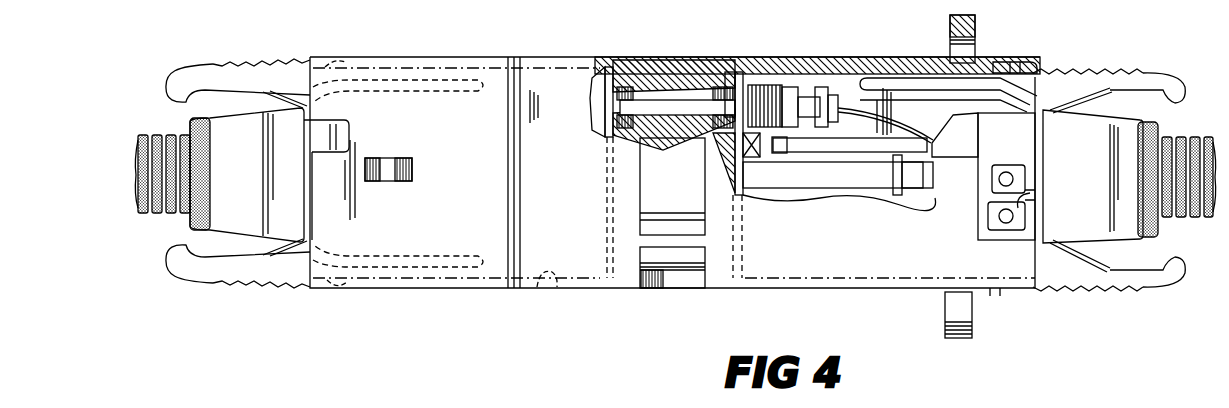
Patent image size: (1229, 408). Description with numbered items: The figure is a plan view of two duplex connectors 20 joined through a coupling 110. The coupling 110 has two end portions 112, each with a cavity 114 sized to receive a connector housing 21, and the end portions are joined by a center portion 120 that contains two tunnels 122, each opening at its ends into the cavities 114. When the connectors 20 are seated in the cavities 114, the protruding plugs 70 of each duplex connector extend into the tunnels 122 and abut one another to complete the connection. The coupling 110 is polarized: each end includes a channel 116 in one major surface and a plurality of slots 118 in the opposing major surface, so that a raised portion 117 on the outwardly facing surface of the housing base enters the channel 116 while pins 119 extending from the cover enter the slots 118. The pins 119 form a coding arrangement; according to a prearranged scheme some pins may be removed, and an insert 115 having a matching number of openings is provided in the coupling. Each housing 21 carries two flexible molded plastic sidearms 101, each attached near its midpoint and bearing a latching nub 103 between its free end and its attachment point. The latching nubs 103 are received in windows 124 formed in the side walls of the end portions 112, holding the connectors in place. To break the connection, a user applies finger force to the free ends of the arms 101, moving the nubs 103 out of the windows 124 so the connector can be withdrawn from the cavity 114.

The duplex connector 20 is at (147, 218).
The connector housing 21 is at (248, 112).
The protruding plug 70 is at (695, 107).
The flexible sidearm 101 is at (920, 75).
The latching nub 103 is at (1013, 62).
The coupling 110 is at (649, 37).
The end portion 112 is at (455, 57).
The cavity 114 is at (546, 282).
The insert 115 is at (1027, 146).
The channel 116 is at (334, 150).
The raised portion 117 is at (349, 124).
The slot 118 is at (1030, 200).
The pin 119 is at (998, 215).
The center portion 120 is at (695, 55).
The tunnel 122 is at (690, 220).
The window 124 is at (1003, 62).